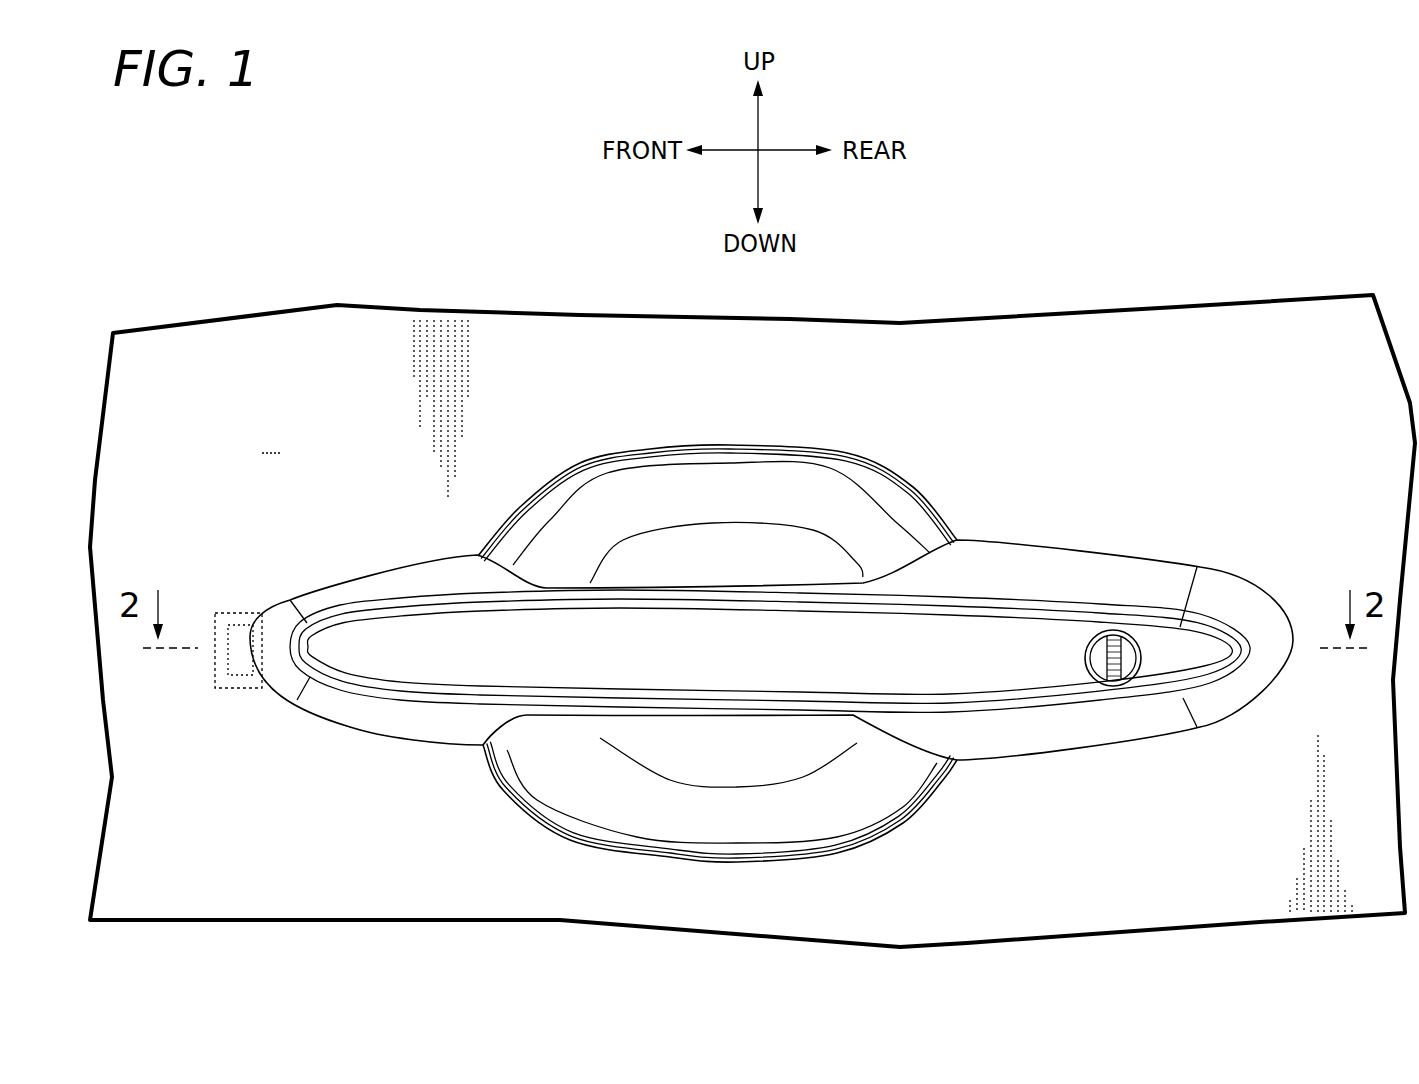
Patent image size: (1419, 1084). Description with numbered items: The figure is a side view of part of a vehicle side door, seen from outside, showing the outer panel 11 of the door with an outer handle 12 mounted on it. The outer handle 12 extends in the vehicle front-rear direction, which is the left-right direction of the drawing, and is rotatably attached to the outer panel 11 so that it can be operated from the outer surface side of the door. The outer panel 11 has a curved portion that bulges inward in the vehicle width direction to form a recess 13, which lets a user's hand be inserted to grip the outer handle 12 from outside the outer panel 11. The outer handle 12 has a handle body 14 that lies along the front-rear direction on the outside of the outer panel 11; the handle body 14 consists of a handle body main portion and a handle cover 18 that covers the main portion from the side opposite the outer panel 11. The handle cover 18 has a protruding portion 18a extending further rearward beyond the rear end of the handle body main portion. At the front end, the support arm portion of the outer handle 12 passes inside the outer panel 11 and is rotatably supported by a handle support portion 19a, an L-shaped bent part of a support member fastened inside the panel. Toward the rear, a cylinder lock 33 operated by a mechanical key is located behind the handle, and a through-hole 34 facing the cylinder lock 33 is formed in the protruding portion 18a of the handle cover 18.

The outer panel 11 is at (617, 365).
The outer handle 12 is at (756, 728).
The recess 13 is at (745, 562).
The handle body 14 is at (724, 660).
The handle cover 18 is at (635, 627).
The protruding portion 18a is at (1220, 585).
The handle support portion 19a is at (243, 612).
The cylinder lock 33 is at (1116, 612).
The through-hole 34 is at (1097, 672).